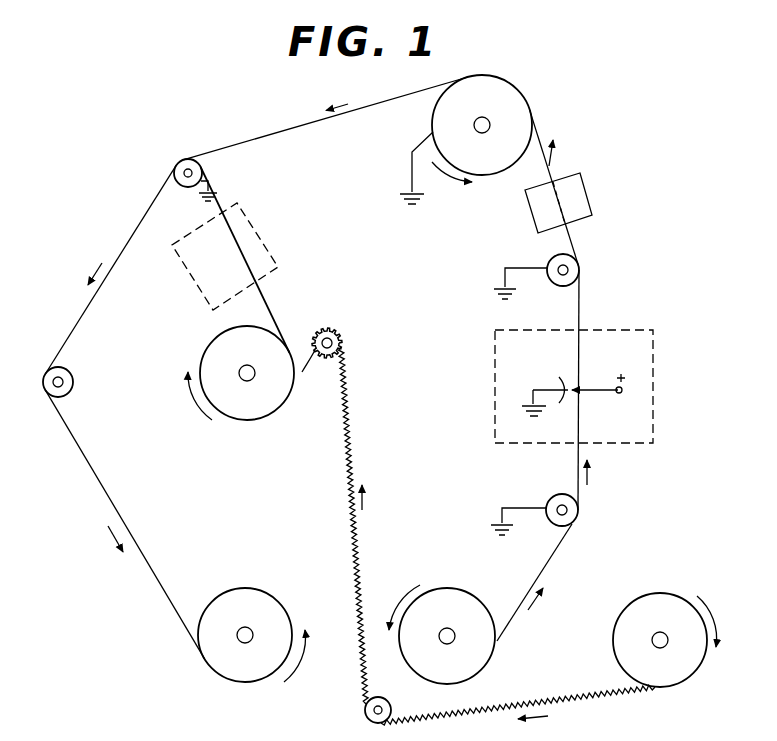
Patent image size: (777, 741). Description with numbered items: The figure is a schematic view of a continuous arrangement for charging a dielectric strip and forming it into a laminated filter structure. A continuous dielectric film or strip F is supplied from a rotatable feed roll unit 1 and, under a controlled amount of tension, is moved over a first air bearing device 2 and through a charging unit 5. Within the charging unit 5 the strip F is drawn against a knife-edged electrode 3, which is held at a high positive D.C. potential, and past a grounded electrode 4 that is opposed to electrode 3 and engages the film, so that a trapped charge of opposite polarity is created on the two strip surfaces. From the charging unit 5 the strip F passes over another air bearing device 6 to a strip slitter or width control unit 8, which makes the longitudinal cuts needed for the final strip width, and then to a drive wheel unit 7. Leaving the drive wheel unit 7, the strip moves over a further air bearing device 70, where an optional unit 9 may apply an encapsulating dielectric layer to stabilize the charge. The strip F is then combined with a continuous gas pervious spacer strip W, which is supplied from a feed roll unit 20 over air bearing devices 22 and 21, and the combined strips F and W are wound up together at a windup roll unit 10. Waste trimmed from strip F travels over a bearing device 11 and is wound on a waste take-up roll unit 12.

The feed roll unit 1 is at (454, 622).
The first air bearing device 2 is at (551, 502).
The knife-edged electrode 3 is at (598, 392).
The grounded electrode 4 is at (544, 386).
The charging unit 5 is at (495, 383).
The air bearing device 6 is at (553, 284).
The drive wheel unit 7 is at (489, 108).
The strip slitter or width control unit 8 is at (593, 205).
The encapsulating unit 9 is at (260, 232).
The windup roll unit 10 is at (259, 362).
The bearing device 11 is at (73, 380).
The waste take-up roll unit 12 is at (257, 618).
The feed roll unit 20 is at (673, 625).
The air bearing device 21 is at (390, 704).
The air bearing device 22 is at (327, 357).
The air bearing device 70 is at (203, 171).
The dielectric film or strip F is at (547, 571).
The gas pervious spacer strip W is at (539, 701).